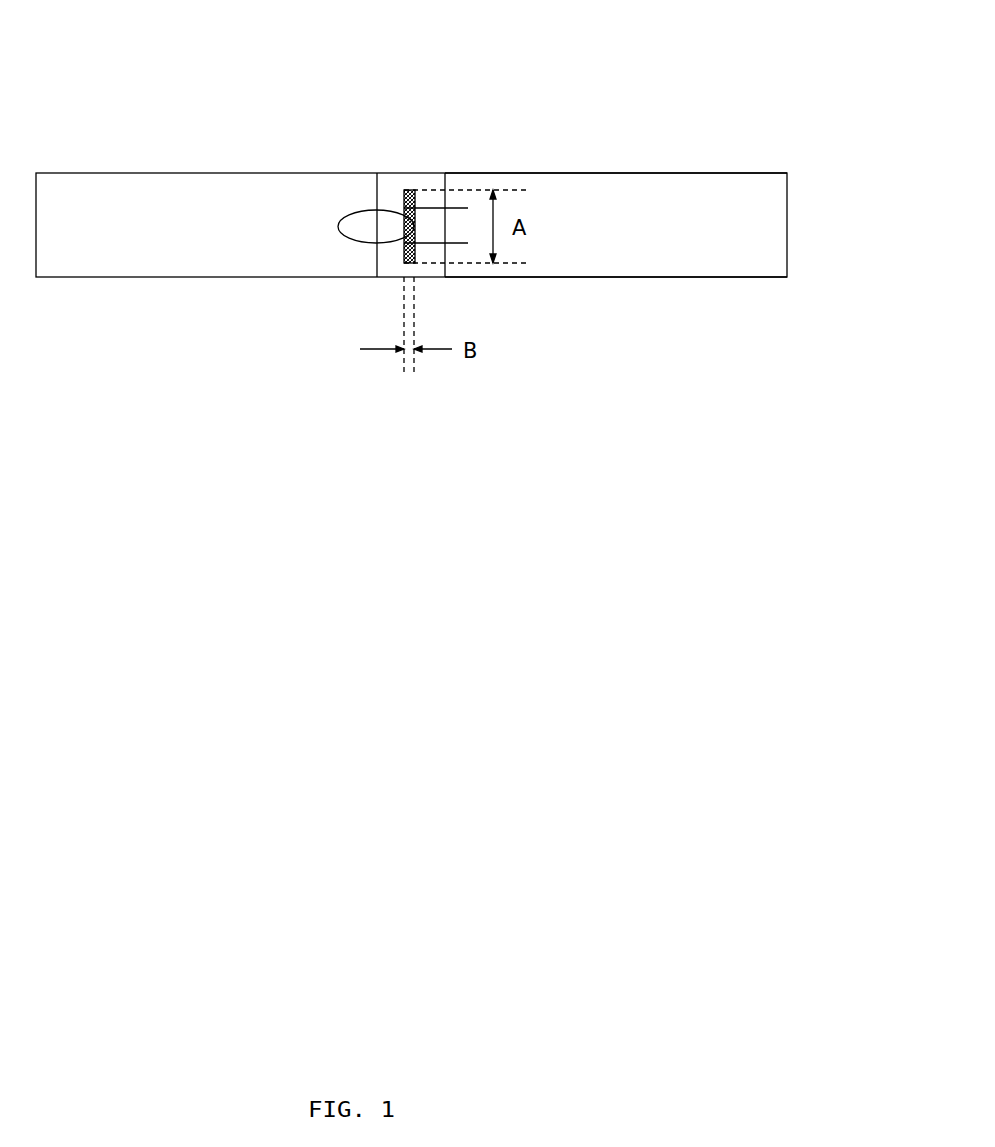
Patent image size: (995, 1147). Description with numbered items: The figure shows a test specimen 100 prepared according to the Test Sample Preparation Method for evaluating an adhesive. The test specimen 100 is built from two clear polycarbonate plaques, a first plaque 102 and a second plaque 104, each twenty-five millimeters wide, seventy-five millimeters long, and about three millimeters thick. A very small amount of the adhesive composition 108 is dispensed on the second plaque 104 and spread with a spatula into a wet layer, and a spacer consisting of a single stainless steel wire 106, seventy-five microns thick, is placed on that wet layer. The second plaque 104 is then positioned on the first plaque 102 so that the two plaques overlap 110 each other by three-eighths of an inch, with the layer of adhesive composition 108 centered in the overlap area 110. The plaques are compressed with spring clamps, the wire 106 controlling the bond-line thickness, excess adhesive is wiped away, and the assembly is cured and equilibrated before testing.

The test specimen 100 is at (550, 80).
The first polycarbonate plaque 102 is at (88, 252).
The second polycarbonate plaque 104 is at (705, 208).
The stainless steel wire 106 is at (362, 212).
The adhesive composition 108 is at (404, 227).
The overlap area 110 is at (390, 185).